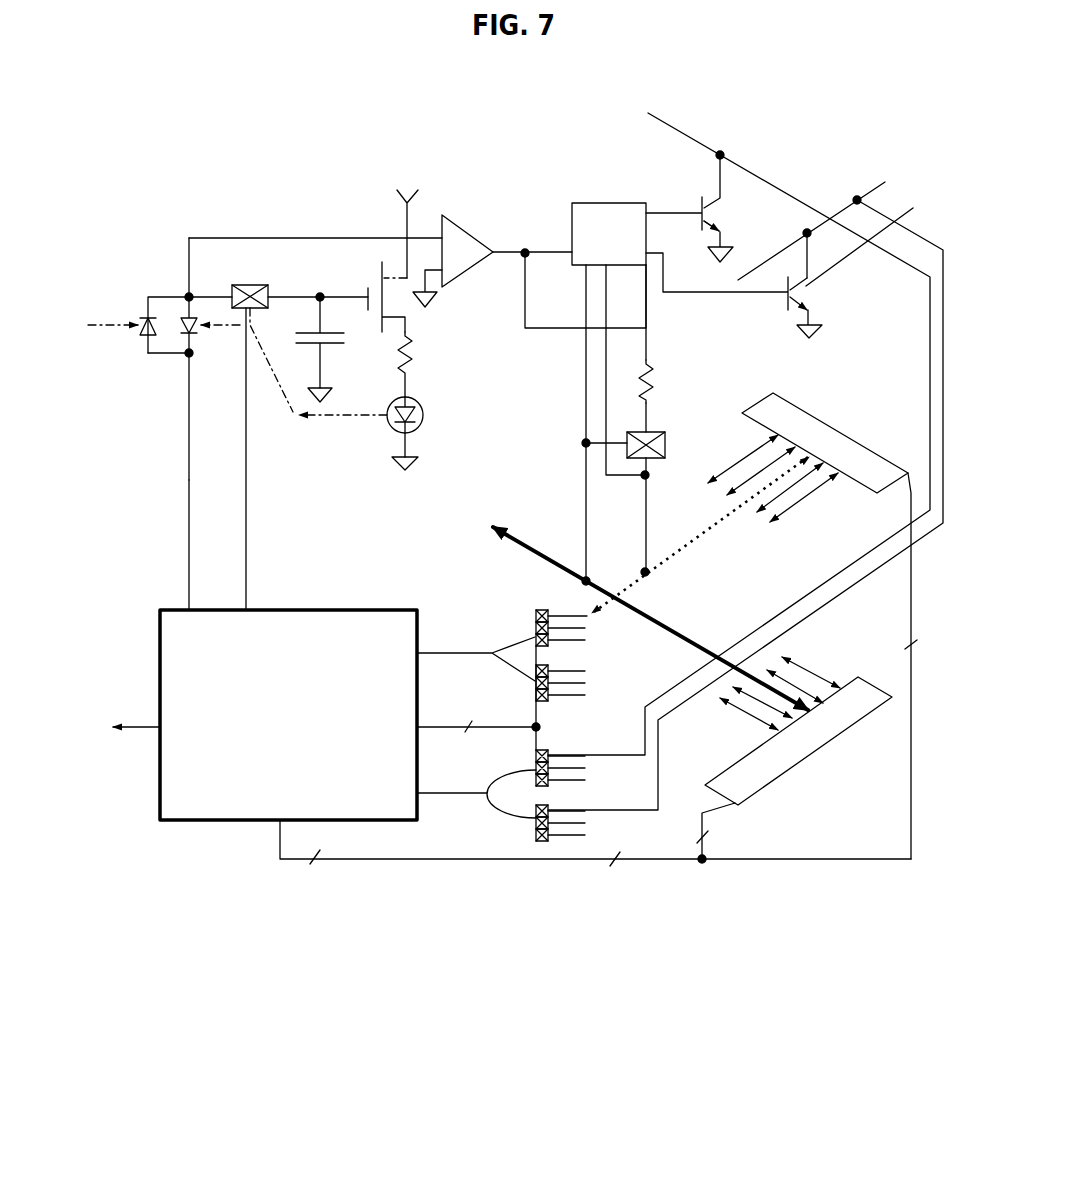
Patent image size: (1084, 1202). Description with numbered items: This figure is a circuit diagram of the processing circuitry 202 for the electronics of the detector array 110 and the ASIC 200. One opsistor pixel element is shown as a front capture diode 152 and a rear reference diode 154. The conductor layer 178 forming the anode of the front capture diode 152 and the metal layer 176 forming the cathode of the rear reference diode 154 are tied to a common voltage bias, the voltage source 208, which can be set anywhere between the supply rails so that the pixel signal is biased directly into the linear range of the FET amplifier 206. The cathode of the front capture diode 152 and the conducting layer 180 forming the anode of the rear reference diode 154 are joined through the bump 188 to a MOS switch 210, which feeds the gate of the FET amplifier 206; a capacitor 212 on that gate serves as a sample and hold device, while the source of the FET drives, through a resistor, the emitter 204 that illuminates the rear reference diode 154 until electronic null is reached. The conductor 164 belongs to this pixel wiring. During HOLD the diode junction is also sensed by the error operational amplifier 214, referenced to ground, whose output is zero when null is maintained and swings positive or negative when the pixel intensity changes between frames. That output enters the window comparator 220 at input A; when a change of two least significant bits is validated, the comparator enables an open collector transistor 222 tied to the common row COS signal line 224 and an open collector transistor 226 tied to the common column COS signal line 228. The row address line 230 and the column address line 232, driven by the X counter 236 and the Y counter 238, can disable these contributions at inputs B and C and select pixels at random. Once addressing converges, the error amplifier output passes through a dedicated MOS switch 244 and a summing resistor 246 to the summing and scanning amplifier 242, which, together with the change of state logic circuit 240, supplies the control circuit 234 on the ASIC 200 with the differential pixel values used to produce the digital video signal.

The array detector 110 is at (133, 274).
The front capture diode 152 is at (141, 326).
The rear reference diode 154 is at (193, 334).
The conductor 164 is at (142, 303).
The metal layer (cathode) 176 is at (192, 358).
The conductor layer (anode) 178 is at (148, 355).
The conducting layer (anode) 180 is at (188, 296).
The bump 188 is at (212, 296).
The ASIC 200 is at (497, 938).
The processing circuitry 202 is at (455, 181).
The emitter 204 is at (392, 429).
The FET amplifier 206 is at (373, 286).
The voltage source 208 is at (186, 607).
The MOS switch 210 is at (254, 284).
The capacitor 212 is at (338, 331).
The error operational amplifier 214 is at (467, 243).
The window comparator 220 is at (598, 202).
The open collector transistor 222 is at (794, 260).
The common row COS signal line 224 is at (846, 204).
The open collector transistor 226 is at (718, 207).
The common column COS signal line 228 is at (699, 140).
The row address line 230 is at (690, 640).
The column address line 232 is at (688, 536).
The control circuit 234 is at (270, 808).
The row address presettable X counter 236 is at (848, 692).
The column address presettable Y counter 238 is at (787, 408).
The change of state logic circuit 240 is at (517, 808).
The summing and scanning amplifier 242 is at (525, 637).
The MOS switch 244 is at (666, 437).
The summing resistor 246 is at (654, 370).